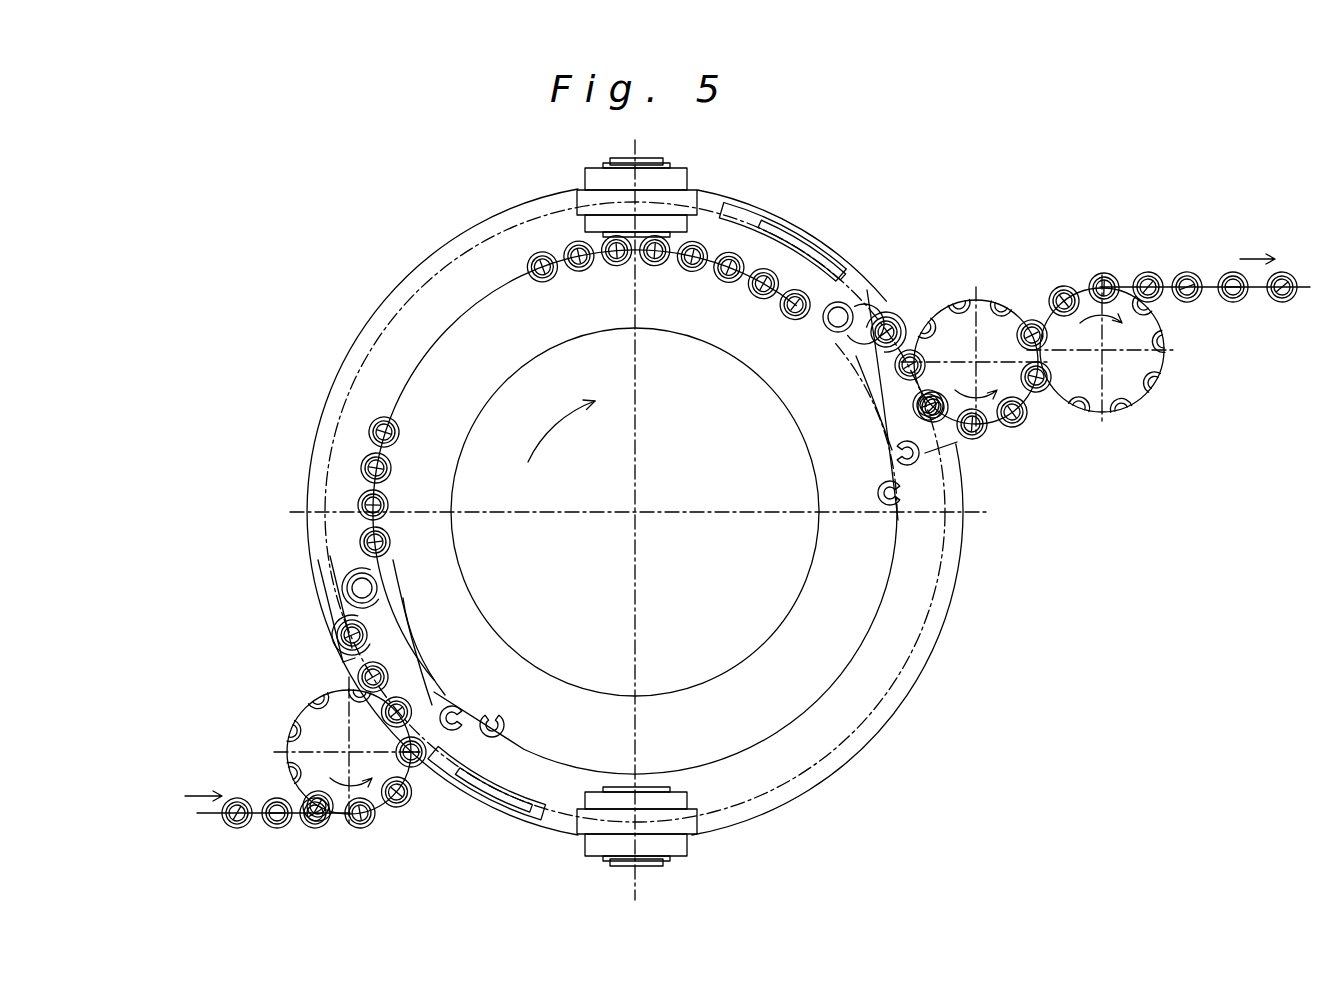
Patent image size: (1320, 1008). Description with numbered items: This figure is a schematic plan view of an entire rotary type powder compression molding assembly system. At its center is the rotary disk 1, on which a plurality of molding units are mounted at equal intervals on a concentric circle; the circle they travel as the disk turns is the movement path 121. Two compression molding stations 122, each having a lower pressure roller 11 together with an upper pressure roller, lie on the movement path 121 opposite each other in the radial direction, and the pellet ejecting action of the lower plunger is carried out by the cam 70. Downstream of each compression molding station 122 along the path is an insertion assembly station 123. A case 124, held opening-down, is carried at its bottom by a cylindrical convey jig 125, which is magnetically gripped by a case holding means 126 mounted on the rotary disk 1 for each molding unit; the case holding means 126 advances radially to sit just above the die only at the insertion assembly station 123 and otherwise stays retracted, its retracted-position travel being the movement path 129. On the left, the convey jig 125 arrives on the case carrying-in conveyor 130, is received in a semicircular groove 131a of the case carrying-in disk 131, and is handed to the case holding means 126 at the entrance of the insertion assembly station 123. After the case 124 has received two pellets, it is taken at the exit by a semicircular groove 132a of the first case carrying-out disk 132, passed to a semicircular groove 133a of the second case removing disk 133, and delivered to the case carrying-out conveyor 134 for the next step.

The rotary disk 1 is at (953, 605).
The lower pressure roller 11 is at (700, 195).
The cam 70 is at (790, 235).
The movement path 121 is at (917, 650).
The compression molding station 122 is at (640, 200).
The insertion assembly station 123 is at (860, 370).
The case 124 is at (912, 352).
The convey jig 125 is at (886, 318).
The case holding means 126 is at (868, 342).
The movement path of the case holding means 129 is at (845, 680).
The case carrying-in conveyor 130 is at (215, 815).
The case carrying-in disk 131 is at (385, 812).
The semicircular groove 131a is at (288, 742).
The first case carrying-out disk 132 is at (975, 300).
The semicircular groove 132a is at (1003, 307).
The second case removing disk 133 is at (1122, 410).
The semicircular groove 133a is at (1150, 380).
The case carrying-out conveyor 134 is at (1256, 300).